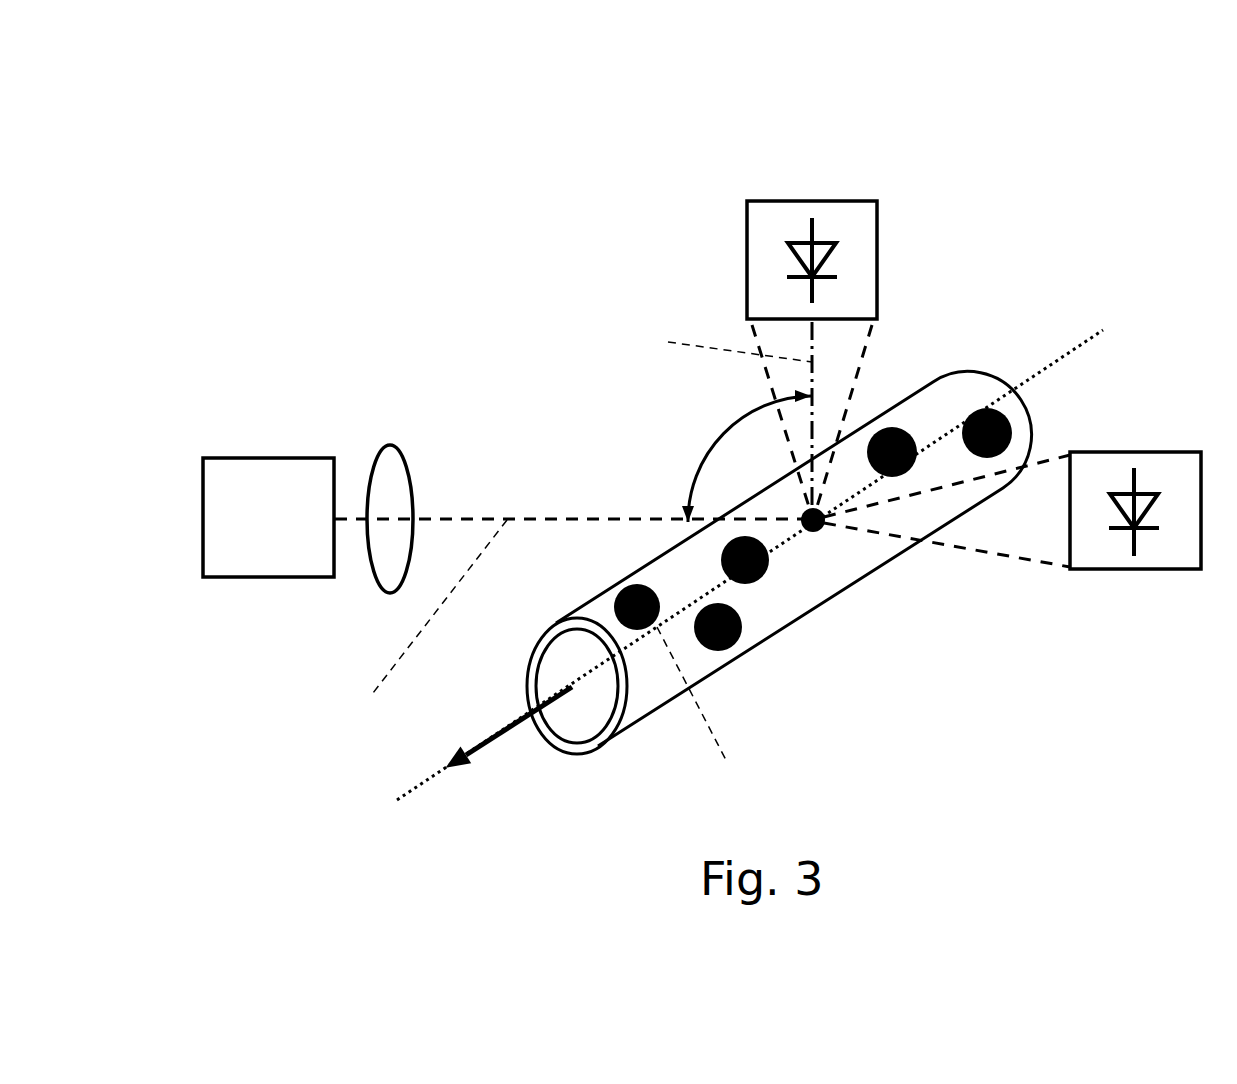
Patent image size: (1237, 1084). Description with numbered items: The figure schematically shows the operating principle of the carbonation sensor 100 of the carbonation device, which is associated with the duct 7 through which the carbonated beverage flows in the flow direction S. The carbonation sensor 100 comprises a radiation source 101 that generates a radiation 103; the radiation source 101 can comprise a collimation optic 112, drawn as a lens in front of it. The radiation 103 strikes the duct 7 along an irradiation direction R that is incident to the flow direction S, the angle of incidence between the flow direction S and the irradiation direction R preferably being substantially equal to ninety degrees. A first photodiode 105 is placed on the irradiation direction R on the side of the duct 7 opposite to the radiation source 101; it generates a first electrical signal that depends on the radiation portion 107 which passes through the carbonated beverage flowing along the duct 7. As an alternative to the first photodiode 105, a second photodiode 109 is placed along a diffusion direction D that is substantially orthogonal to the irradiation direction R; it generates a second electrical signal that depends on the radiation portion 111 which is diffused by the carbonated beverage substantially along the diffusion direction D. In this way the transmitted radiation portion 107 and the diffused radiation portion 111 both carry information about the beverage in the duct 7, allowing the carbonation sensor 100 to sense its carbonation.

The carbonation sensor 100 is at (440, 254).
The radiation source 101 is at (272, 440).
The collimation optic 112 is at (390, 443).
The radiation 103 is at (552, 504).
The duct 7 is at (780, 630).
The second photodiode 109 is at (802, 184).
The radiation portion 111 is at (882, 352).
The first photodiode 105 is at (1133, 436).
The radiation portion 107 is at (1017, 579).
The diffusion direction D is at (729, 418).
The irradiation direction R is at (432, 624).
The flow direction S is at (700, 710).